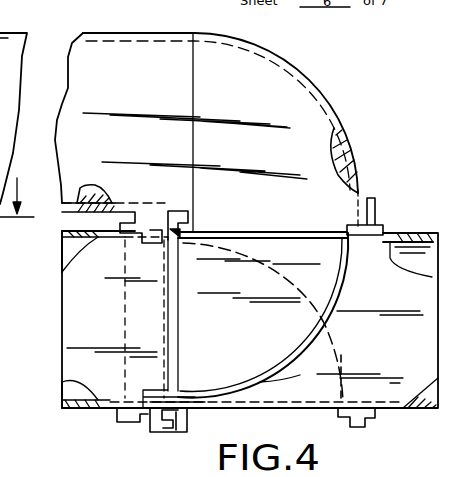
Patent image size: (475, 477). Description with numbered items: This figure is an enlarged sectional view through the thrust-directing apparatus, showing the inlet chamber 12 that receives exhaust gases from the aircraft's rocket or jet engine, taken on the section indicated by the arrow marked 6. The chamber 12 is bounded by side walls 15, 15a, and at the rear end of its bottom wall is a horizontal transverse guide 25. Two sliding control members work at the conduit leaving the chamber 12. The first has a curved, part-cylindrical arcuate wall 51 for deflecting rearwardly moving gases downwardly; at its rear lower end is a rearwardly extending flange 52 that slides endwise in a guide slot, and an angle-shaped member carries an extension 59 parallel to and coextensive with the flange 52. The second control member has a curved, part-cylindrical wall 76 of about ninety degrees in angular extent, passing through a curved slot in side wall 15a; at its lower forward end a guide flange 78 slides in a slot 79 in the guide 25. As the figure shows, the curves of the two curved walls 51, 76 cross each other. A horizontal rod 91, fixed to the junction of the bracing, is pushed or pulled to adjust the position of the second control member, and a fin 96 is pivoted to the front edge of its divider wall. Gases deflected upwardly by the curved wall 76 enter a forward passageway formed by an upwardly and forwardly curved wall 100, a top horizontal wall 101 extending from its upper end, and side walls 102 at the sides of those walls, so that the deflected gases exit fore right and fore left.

The section line 6 is at (18, 197).
The inlet chamber 12 is at (266, 380).
The side wall 15 is at (0, 339).
The side wall 15a is at (70, 280).
The guide 25 is at (182, 428).
The curved wall 51 is at (342, 367).
The flange 52 is at (340, 417).
The extension 59 is at (155, 428).
The curved wall 76 is at (341, 290).
The guide flange 78 is at (145, 417).
The slot 79 is at (145, 423).
The horizontal rod 91 is at (182, 236).
The fin 96 is at (125, 315).
The curved wall 100 is at (338, 107).
The top horizontal wall 101 is at (0, 15).
The side walls 102 is at (160, 28).